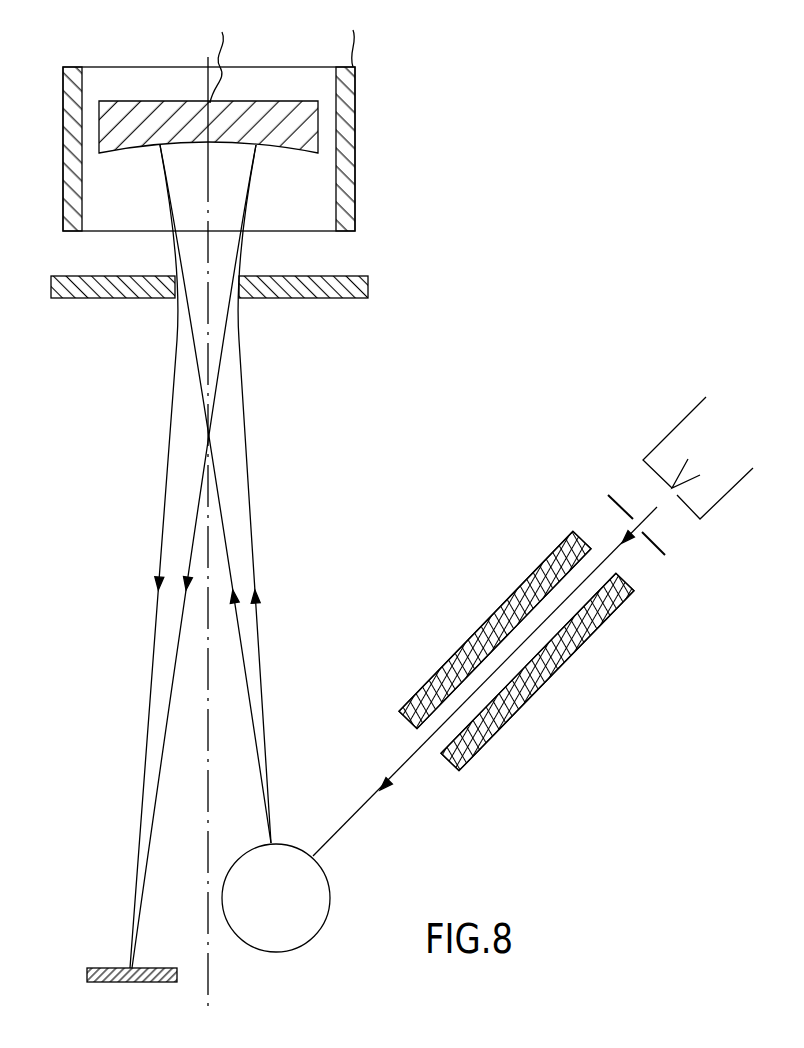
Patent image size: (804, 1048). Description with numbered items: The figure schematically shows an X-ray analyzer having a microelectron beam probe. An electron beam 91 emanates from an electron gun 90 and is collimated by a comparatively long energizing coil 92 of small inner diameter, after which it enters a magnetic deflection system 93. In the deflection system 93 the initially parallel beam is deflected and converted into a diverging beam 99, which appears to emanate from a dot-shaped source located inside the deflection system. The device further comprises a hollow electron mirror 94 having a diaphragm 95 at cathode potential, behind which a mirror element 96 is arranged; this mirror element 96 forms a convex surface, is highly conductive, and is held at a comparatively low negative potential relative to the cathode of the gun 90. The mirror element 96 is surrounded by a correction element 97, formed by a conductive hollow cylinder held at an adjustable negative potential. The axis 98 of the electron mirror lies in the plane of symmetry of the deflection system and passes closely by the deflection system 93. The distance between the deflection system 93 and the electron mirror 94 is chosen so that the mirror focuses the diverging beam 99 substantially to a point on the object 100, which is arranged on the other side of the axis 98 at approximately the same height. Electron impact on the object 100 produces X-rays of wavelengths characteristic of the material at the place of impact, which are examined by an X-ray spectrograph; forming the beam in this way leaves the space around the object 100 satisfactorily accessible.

The electron gun 90 is at (713, 532).
The electron beam 91 is at (606, 556).
The energizing coil 92 is at (530, 697).
The magnetic deflection system 93 is at (330, 898).
The hollow electron mirror 94 is at (383, 183).
The diaphragm 95 is at (370, 287).
The mirror element 96 is at (137, 113).
The correction element 97 is at (348, 88).
The axis 98 is at (209, 996).
The diverging beam 99 is at (258, 643).
The object 100 is at (147, 983).